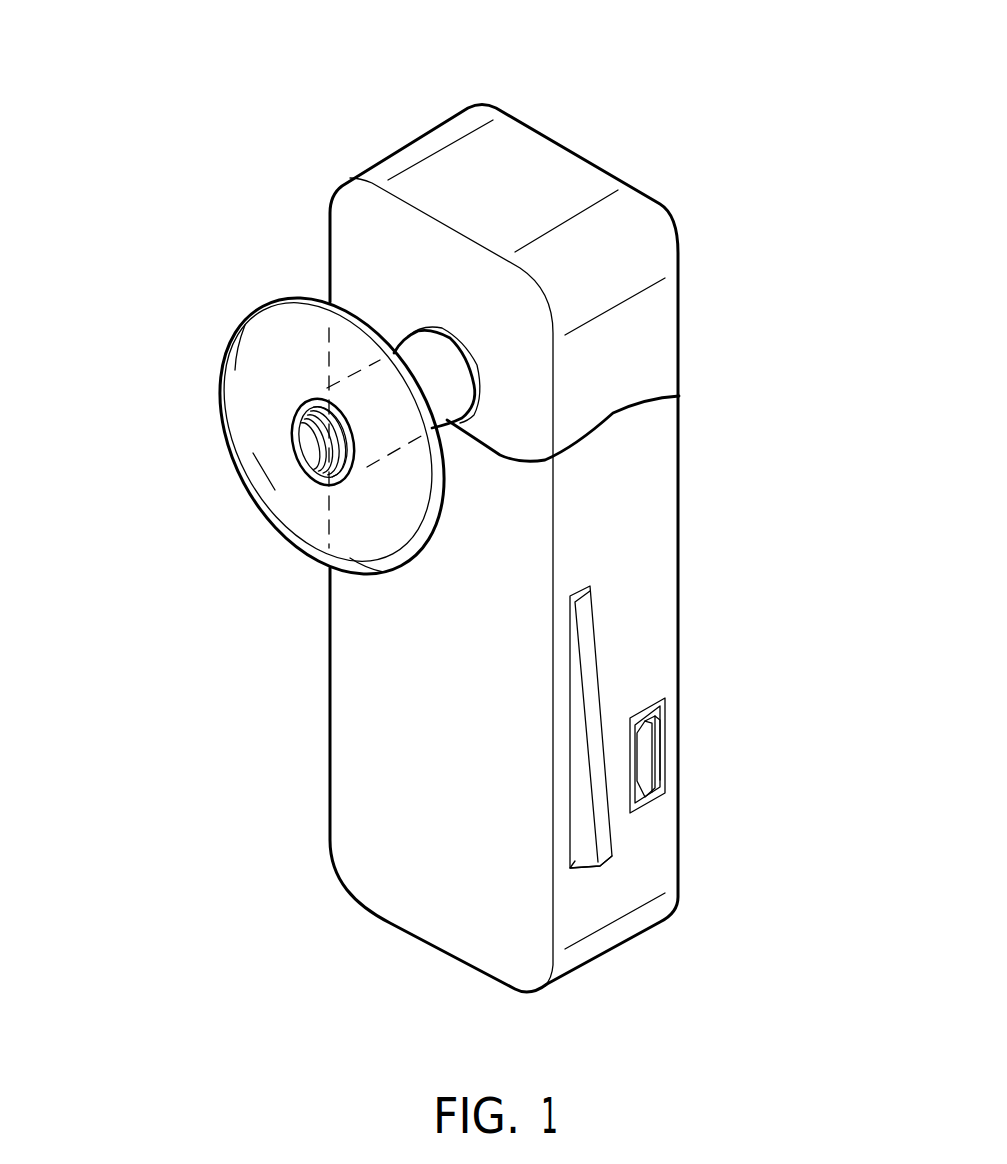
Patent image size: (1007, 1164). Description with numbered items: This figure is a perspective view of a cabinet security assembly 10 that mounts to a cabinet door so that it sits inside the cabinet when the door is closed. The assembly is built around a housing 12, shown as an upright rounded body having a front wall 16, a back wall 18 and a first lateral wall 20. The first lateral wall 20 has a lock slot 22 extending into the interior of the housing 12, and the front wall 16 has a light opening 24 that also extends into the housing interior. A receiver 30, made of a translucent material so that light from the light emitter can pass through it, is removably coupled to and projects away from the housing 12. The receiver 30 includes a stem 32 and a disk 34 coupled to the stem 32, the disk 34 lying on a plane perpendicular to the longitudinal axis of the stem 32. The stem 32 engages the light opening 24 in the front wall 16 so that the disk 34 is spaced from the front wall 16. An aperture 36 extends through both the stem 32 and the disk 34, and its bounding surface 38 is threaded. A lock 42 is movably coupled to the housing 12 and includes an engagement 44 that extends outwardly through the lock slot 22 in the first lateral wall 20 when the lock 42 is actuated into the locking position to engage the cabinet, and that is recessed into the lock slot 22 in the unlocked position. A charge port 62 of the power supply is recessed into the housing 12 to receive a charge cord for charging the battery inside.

The cabinet security assembly 10 is at (690, 100).
The housing 12 is at (667, 225).
The front wall 16 is at (330, 745).
The back wall 18 is at (679, 490).
The first lateral wall 20 is at (648, 573).
The lock slot 22 is at (570, 828).
The light opening 24 is at (400, 352).
The receiver 30 is at (203, 456).
The stem 32 is at (679, 396).
The disk 34 is at (300, 543).
The aperture 36 is at (290, 461).
The bounding surface 38 is at (300, 425).
The lock 42 is at (592, 717).
The engagement 44 is at (605, 859).
The charge port 62 is at (652, 778).